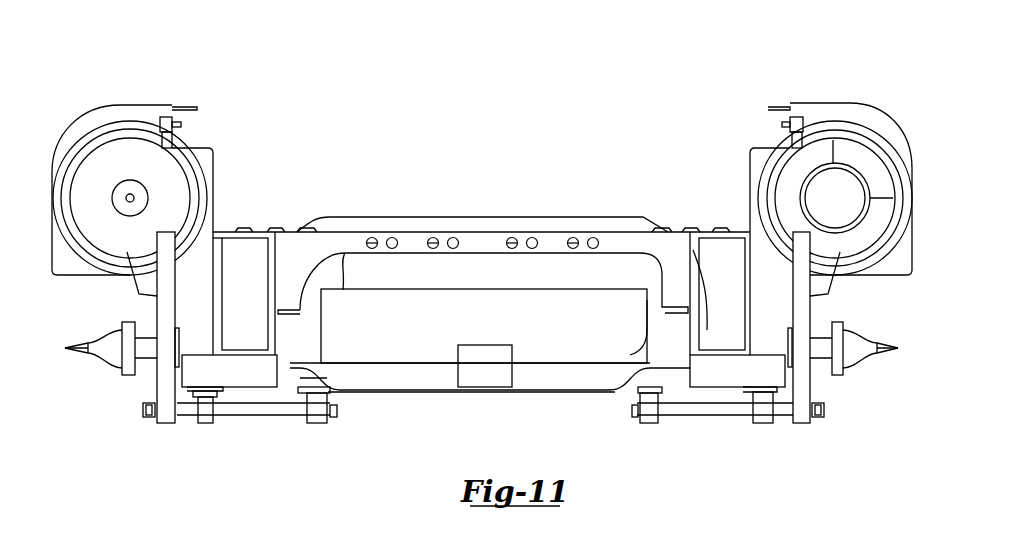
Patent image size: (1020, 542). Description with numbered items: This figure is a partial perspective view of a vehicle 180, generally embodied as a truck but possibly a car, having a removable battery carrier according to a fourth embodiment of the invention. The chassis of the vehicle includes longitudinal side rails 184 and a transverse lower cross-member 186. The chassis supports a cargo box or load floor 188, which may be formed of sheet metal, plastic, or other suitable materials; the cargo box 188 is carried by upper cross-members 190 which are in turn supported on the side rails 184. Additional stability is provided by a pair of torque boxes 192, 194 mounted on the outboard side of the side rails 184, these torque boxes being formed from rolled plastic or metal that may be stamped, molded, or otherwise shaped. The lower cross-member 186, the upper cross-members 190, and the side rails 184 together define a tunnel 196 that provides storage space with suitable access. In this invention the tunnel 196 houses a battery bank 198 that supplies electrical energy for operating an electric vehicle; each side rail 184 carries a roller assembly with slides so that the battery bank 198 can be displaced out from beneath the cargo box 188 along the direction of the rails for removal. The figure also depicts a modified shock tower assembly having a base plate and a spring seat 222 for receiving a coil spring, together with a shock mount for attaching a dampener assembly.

The vehicle 180 is at (552, 188).
The side rails 184 is at (642, 352).
The lower cross-member 186 is at (413, 394).
The cargo box or load floor 188 is at (250, 229).
The upper cross-members 190 is at (495, 240).
The torque box 192 is at (218, 313).
The torque box 194 is at (750, 293).
The tunnel 196 is at (498, 283).
The battery bank 198 is at (345, 290).
The spring seat 222 is at (93, 175).